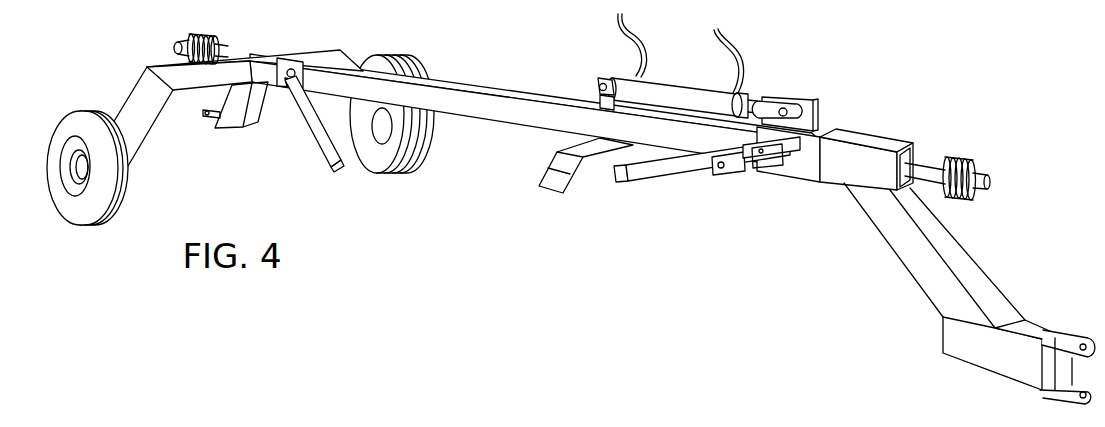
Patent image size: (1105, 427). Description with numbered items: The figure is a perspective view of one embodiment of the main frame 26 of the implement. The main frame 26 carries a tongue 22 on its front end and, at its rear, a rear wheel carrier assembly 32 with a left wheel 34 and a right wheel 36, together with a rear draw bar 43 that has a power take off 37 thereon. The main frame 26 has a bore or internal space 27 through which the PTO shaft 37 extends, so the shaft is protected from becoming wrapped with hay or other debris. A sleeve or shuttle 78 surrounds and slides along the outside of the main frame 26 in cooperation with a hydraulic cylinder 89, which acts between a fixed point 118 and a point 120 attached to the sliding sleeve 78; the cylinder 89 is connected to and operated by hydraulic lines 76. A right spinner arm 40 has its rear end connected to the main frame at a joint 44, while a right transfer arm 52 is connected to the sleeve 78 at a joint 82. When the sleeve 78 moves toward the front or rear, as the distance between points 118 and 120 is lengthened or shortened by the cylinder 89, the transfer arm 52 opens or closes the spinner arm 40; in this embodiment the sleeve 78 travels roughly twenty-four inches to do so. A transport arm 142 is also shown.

The tongue 22 is at (1028, 335).
The main frame 26 is at (470, 88).
The bore or internal space 27 is at (915, 160).
The rear wheel carrier assembly 32 is at (128, 65).
The left wheel 34 is at (432, 147).
The right wheel 36 is at (122, 195).
The power take off shaft 37 is at (183, 44).
The right spinner arm 40 is at (320, 150).
The rear draw bar 43 is at (204, 113).
The joint 44 is at (290, 70).
The right transfer arm 52 is at (652, 178).
The hydraulic lines 76 is at (615, 24).
The sleeve or shuttle 78 is at (835, 150).
The joint 82 is at (736, 172).
The hydraulic cylinder 89 is at (683, 90).
The fixed point 118 is at (605, 79).
The point attached to sliding sleeve 120 is at (805, 105).
The transport arm 142 is at (553, 195).